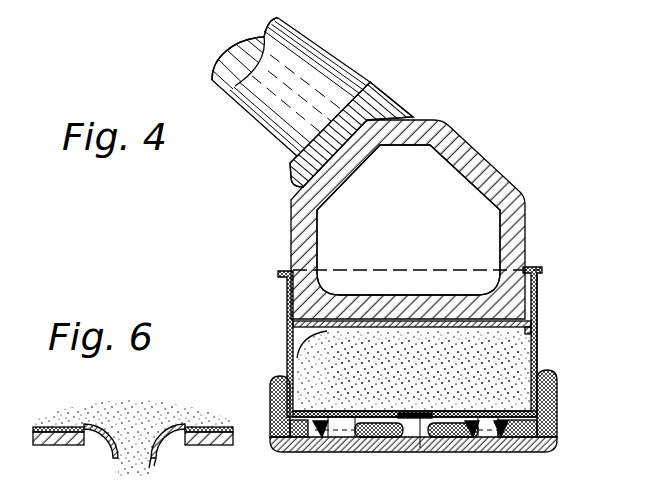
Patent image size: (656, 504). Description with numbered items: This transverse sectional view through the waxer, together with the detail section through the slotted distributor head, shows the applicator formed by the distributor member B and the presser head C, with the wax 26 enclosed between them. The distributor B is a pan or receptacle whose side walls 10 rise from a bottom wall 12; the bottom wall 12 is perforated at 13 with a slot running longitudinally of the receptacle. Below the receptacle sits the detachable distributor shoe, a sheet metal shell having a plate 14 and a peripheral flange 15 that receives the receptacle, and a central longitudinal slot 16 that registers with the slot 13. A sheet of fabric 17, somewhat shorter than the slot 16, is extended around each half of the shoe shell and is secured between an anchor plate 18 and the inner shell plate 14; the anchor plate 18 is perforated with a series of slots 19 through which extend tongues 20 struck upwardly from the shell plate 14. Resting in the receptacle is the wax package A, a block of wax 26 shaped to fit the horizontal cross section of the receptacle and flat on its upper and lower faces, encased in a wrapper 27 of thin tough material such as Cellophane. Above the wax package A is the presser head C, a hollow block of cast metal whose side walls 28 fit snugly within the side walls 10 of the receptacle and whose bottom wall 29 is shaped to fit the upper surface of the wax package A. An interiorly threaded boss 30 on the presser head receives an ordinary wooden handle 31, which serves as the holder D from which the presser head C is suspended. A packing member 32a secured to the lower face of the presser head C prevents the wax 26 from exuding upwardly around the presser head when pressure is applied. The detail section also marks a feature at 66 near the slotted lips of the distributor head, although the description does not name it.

In FIG. 4, the side walls 10 is at (533, 280).
In FIG. 4, the bottom wall 12 is at (316, 445).
In FIG. 6, the bottom wall 12 is at (213, 445).
In FIG. 4, the slot 13 is at (410, 418).
In FIG. 6, the slot 13 is at (182, 440).
In FIG. 4, the plate 14 is at (374, 446).
In FIG. 4, the peripheral flange 15 is at (540, 412).
In FIG. 4, the central longitudinal slot 16 is at (418, 425).
In FIG. 4, the sheet of fabric 17 is at (555, 440).
In FIG. 4, the anchor plate 18 is at (537, 444).
In FIG. 4, the slots 19 is at (497, 432).
In FIG. 4, the tongues 20 is at (470, 437).
In FIG. 4, the wax 26 is at (512, 367).
In FIG. 4, the wrapper 27 is at (535, 333).
In FIG. 4, the side walls 28 is at (527, 232).
In FIG. 4, the bottom wall 29 is at (416, 284).
In FIG. 4, the interiorly threaded boss 30 is at (382, 94).
In FIG. 4, the wooden handle 31 is at (212, 72).
In FIG. 4, the packing member 32a is at (297, 356).
In FIG. 6, the perforation 66 is at (118, 455).
In FIG. 4, the wax package A is at (425, 370).
In FIG. 4, the distributor member B is at (537, 347).
In FIG. 4, the presser head C is at (490, 164).
In FIG. 4, the holder D is at (228, 53).